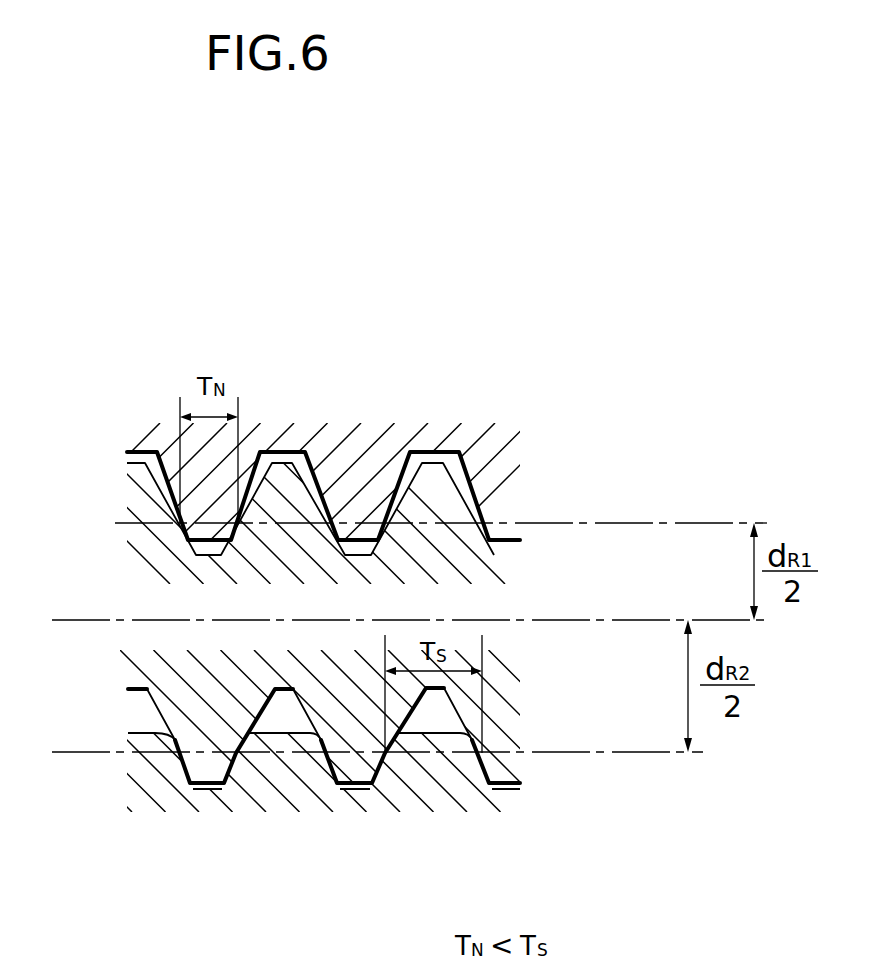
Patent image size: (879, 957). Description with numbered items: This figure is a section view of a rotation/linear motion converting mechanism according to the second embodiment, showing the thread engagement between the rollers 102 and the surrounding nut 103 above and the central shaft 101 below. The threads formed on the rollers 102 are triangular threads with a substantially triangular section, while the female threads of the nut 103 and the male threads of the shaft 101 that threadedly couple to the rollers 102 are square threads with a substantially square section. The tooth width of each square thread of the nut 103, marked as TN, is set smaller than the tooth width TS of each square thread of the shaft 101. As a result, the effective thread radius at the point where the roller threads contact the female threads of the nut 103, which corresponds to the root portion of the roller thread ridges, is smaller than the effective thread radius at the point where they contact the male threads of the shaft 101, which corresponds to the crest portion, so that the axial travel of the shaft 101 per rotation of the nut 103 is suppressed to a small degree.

The shaft 101 is at (273, 800).
The rollers 102 is at (137, 572).
The nut 103 is at (247, 436).